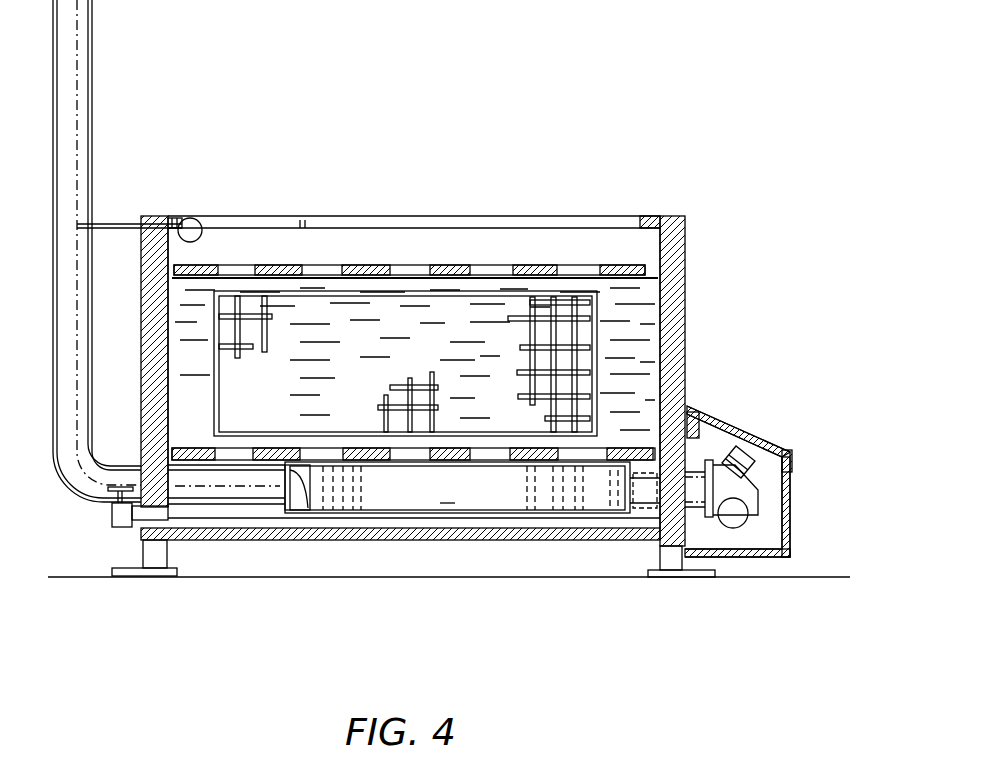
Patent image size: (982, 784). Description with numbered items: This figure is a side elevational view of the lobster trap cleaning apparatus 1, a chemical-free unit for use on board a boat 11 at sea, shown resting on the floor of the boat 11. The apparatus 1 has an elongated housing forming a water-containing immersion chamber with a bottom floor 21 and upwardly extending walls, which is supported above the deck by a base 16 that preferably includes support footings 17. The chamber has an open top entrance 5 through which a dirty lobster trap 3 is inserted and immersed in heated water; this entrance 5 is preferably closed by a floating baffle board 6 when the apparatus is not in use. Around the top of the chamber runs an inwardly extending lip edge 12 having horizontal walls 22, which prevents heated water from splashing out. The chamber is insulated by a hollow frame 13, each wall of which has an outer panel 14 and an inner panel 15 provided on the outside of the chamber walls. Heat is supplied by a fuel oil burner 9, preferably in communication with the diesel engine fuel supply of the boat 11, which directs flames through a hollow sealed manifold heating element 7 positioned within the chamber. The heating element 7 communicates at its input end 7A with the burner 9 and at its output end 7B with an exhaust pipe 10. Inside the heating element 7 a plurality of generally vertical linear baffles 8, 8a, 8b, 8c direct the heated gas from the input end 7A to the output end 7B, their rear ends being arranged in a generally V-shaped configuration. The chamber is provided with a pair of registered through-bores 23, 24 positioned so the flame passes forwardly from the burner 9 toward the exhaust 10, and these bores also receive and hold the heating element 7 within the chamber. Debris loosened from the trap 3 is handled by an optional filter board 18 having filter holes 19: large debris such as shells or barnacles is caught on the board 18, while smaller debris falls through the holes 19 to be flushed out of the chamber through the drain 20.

The lobster trap cleaning apparatus 1 is at (594, 188).
The lobster trap 3 is at (572, 302).
The top entrance 5 is at (423, 393).
The floating baffle board 6 is at (445, 265).
The manifold heating element 7 is at (458, 557).
The input end 7A is at (312, 518).
The output end 7B is at (620, 505).
The baffle 8 is at (524, 559).
The baffle 8a is at (572, 508).
The baffle 8b is at (548, 508).
The baffle 8c is at (538, 508).
The fuel oil burner 9 is at (738, 442).
The exhaust pipe 10 is at (75, 70).
The boat 11 is at (812, 577).
The lip edge 12 is at (243, 216).
The hollow frame 13 is at (685, 258).
The outer panel 14 is at (444, 381).
The inner panel 15 is at (660, 385).
The base 16 is at (165, 548).
The support footings 17 is at (130, 575).
The filter board 18 is at (286, 455).
The filter holes 19 is at (238, 456).
The drain 20 is at (112, 512).
The bottom floor 21 is at (408, 537).
The horizontal walls 22 is at (192, 219).
The through-bore 23 is at (652, 470).
The through-bore 24 is at (263, 490).